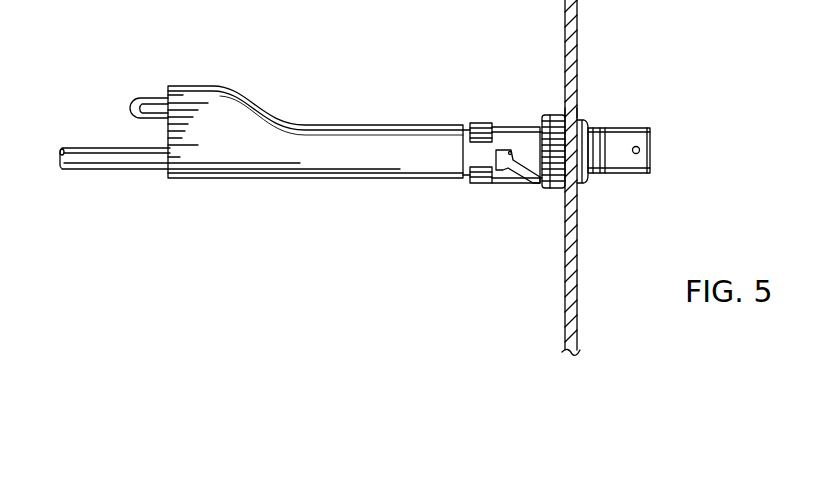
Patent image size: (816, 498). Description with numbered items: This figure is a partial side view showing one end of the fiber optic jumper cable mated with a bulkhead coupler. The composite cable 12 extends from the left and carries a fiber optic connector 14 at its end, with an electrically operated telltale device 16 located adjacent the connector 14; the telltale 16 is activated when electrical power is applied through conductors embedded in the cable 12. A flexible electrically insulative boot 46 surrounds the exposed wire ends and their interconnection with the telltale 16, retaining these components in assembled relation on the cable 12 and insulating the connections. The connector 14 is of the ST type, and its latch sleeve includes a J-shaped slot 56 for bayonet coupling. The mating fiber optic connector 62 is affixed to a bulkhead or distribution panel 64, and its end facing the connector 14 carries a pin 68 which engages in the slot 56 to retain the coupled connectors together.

The composite cable 12 is at (87, 170).
The fiber optic connector 14 is at (495, 195).
The electrically operated telltale device 16 is at (150, 101).
The flexible electrically insulative boot 46 is at (277, 110).
The J-shaped slot 56 is at (547, 192).
The fiber optic connector 62 is at (550, 101).
The bulkhead or distribution panel 64 is at (565, 300).
The pin 68 is at (510, 152).